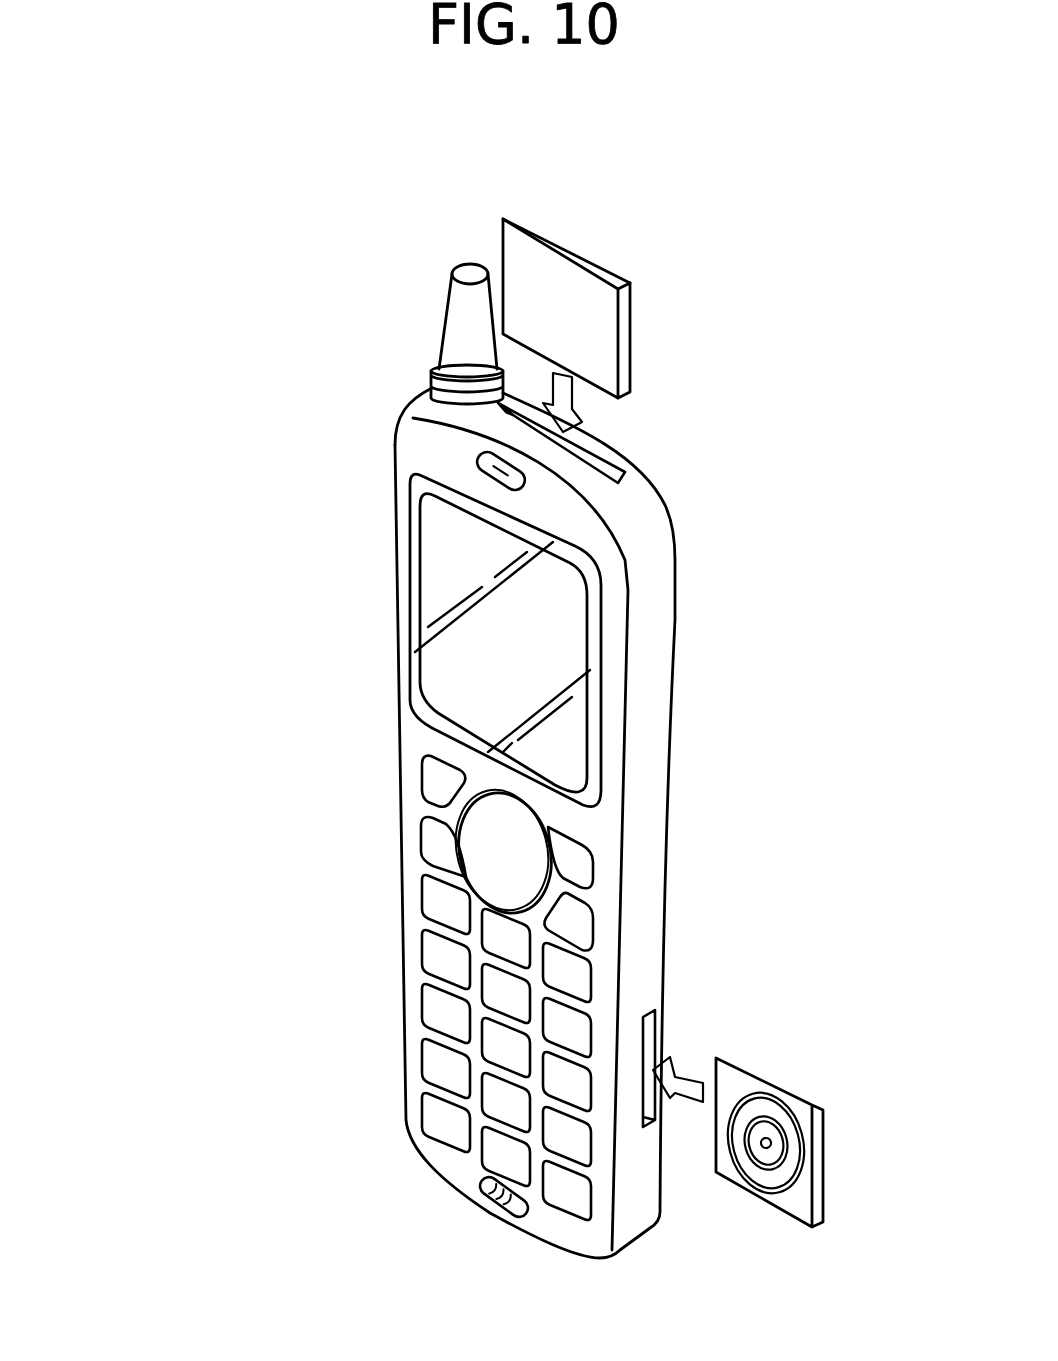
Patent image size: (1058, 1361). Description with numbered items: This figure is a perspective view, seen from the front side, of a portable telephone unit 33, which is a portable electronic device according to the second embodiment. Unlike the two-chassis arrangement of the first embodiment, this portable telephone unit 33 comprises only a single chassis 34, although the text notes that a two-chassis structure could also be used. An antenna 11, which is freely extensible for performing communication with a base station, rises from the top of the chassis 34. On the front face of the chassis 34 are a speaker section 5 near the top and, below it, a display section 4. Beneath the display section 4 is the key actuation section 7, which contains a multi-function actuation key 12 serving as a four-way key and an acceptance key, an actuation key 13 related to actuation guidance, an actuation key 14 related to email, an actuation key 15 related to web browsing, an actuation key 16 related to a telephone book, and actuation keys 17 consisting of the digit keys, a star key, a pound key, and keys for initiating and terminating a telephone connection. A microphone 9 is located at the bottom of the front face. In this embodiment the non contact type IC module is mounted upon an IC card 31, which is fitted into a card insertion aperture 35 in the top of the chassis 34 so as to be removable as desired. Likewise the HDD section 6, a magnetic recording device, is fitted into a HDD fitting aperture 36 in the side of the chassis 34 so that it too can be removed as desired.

The portable telephone unit 33 is at (322, 638).
The chassis 34 is at (675, 622).
The antenna 11 is at (457, 333).
The IC card 31 is at (632, 341).
The card insertion aperture 35 is at (606, 444).
The speaker section 5 is at (395, 436).
The display section 4 is at (472, 608).
The key actuation section 7 is at (388, 905).
The actuation key 13 is at (420, 777).
The multi-function actuation key 12 is at (477, 833).
The actuation key 14 is at (425, 862).
The actuation key 15 is at (578, 855).
The actuation key 16 is at (575, 922).
The actuation keys 17 is at (497, 1050).
The microphone 9 is at (482, 1191).
The HDD fitting aperture 36 is at (650, 1040).
The HDD section 6 is at (797, 1092).